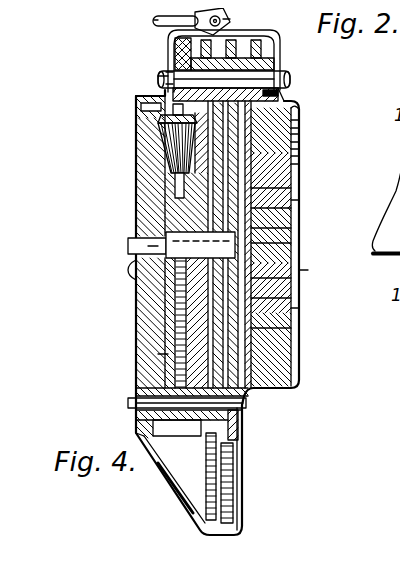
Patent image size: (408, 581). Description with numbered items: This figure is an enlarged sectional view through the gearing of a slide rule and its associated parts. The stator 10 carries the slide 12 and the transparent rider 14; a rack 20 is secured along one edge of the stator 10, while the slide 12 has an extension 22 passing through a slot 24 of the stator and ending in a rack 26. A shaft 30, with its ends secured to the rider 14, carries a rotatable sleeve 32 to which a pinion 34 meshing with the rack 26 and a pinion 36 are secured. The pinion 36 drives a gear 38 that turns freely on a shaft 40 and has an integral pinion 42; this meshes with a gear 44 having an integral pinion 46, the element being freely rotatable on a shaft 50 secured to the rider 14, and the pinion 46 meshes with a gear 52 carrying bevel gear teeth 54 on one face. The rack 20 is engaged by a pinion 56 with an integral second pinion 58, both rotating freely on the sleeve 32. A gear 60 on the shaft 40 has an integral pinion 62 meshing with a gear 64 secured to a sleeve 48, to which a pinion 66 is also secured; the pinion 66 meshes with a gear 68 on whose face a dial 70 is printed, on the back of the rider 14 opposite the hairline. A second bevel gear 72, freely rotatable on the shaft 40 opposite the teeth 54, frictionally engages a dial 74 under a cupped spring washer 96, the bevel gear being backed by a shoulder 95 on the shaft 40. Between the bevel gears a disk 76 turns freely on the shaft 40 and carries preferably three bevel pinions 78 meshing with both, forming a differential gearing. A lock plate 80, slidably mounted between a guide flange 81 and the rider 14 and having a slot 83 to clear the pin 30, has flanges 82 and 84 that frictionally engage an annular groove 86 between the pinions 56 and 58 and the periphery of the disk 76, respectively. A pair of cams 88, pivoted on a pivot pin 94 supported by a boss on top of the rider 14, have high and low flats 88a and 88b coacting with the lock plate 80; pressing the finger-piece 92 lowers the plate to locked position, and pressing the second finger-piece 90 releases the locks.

The stator 10 is at (270, 160).
The slide 12 is at (270, 200).
The rider 14 is at (305, 101).
The rack 20 is at (274, 80).
The extension 22 is at (300, 155).
The slot 24 is at (300, 140).
The rack 26 is at (295, 112).
The shaft 30 is at (224, 75).
The sleeve 32 is at (158, 64).
The pinion 34 is at (292, 95).
The pinion 36 is at (160, 138).
The gear 38 is at (265, 180).
The shaft 40 is at (250, 235).
The pinion 42 is at (270, 220).
The gear 44 is at (265, 290).
The pinion 46 is at (200, 440).
The sleeve 48 is at (132, 433).
The shaft 50 is at (237, 396).
The gear 52 is at (290, 146).
The bevel gear teeth 54 is at (125, 397).
The pinion 56 is at (292, 125).
The second pinion 58 is at (158, 76).
The gear 60 is at (292, 192).
The pinion 62 is at (300, 262).
The gear 64 is at (294, 300).
The pinion 66 is at (144, 427).
The gear 68 is at (150, 346).
The dial 70 is at (128, 171).
The second bevel gear 72 is at (128, 183).
The dial 74 is at (128, 279).
The disk 76 is at (160, 200).
The bevel pinions 78 is at (170, 148).
The lock plate 80 is at (272, 45).
The guide flange 81 is at (162, 46).
The flange 82 is at (284, 72).
The slot 83 is at (150, 68).
The flange 84 is at (160, 86).
The annular groove 86 is at (299, 133).
The cams 88 is at (146, 12).
The high flat 88a is at (167, 55).
The low flat 88b is at (280, 32).
The second finger-piece 90 is at (222, 11).
The finger-piece 92 is at (146, 13).
The pivot pin 94 is at (224, 8).
The shoulder 95 is at (44, 13).
The spring washer 96 is at (123, 263).